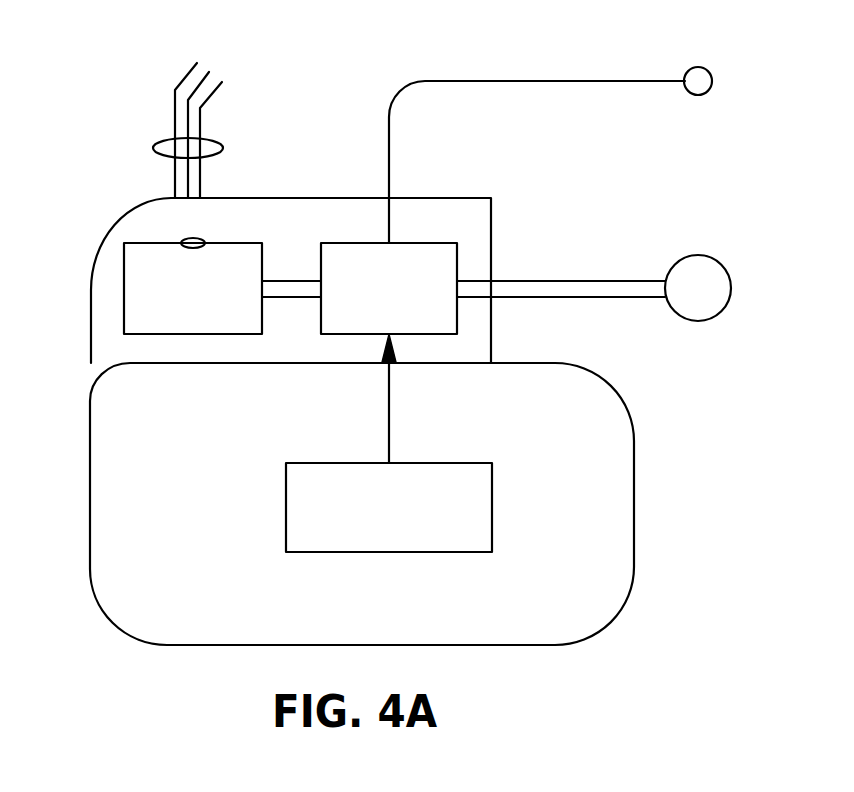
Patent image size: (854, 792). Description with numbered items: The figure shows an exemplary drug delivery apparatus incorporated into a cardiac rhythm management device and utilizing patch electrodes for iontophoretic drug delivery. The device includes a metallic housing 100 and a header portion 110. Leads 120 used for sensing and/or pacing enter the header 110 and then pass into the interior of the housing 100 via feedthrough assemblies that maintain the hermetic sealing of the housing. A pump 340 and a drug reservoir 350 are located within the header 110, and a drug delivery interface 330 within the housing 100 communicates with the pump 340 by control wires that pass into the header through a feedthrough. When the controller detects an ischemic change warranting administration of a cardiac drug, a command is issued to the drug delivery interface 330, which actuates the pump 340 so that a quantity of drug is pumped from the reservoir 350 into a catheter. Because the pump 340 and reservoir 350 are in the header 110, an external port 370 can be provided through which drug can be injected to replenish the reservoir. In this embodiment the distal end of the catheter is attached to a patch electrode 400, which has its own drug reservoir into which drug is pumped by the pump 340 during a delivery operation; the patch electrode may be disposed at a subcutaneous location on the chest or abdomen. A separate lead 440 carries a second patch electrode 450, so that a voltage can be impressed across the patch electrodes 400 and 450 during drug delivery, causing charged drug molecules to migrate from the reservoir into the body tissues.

The metallic housing 100 is at (90, 482).
The header portion 110 is at (90, 282).
The leads 120 is at (152, 150).
The drug delivery interface 330 is at (286, 508).
The pump 340 is at (412, 323).
The drug reservoir 350 is at (217, 323).
The external port 370 is at (203, 239).
The patch electrode 400 is at (722, 262).
The separate lead 440 is at (559, 81).
The patch electrode 450 is at (708, 71).